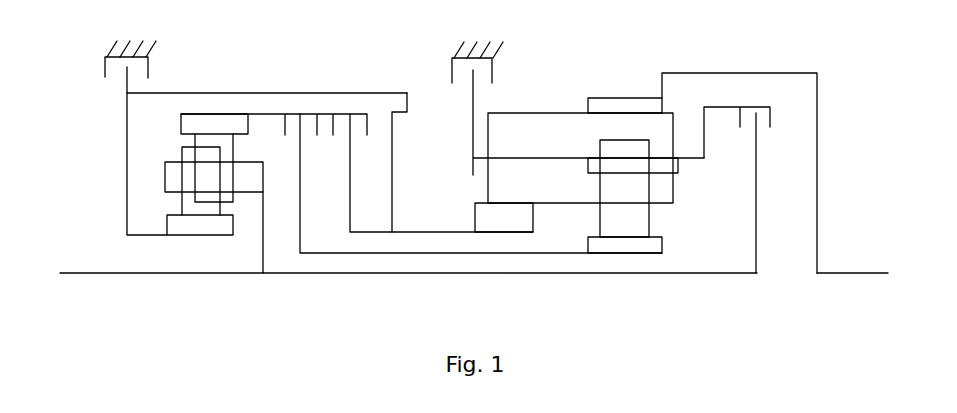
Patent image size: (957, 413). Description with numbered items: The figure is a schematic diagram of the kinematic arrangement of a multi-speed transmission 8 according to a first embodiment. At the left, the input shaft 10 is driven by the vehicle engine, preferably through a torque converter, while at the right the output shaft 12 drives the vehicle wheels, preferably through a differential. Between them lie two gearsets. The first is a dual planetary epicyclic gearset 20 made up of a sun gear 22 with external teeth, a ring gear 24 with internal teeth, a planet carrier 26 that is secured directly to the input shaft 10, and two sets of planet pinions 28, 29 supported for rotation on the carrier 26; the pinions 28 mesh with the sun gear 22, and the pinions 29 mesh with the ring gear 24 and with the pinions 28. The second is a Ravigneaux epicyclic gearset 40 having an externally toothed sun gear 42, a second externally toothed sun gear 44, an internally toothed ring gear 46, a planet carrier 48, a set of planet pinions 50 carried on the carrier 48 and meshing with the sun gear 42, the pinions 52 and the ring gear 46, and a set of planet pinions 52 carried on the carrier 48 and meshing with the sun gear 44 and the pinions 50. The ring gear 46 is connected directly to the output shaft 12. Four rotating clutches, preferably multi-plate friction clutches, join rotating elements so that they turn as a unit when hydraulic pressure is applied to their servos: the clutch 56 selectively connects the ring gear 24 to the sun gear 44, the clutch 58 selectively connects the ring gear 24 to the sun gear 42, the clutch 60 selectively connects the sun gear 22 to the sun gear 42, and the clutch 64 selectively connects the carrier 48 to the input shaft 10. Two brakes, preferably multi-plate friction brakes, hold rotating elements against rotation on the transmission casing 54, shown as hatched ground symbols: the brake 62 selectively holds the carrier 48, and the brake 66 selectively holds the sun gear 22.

The transmission 8 is at (76, 178).
The input shaft 10 is at (72, 275).
The output shaft 12 is at (852, 273).
The dual planetary epicyclic gearset 20 is at (213, 75).
The sun gear 22 is at (200, 228).
The ring gear 24 is at (213, 123).
The planet carrier 26 is at (176, 161).
The planet pinions 28 is at (180, 207).
The planet pinions 29 is at (234, 151).
The Ravigneaux epicyclic gearset 40 is at (593, 66).
The sun gear 42 is at (488, 225).
The sun gear 44 is at (643, 245).
The ring gear 46 is at (598, 108).
The planet carrier 48 is at (692, 160).
The planet pinions 50 is at (513, 201).
The planet pinions 52 is at (643, 215).
The transmission casing 54 is at (150, 48).
The clutch 56 is at (299, 145).
The clutch 58 is at (347, 137).
The clutch 60 is at (408, 112).
The brake 62 is at (473, 82).
The clutch 64 is at (756, 127).
The brake 66 is at (127, 77).